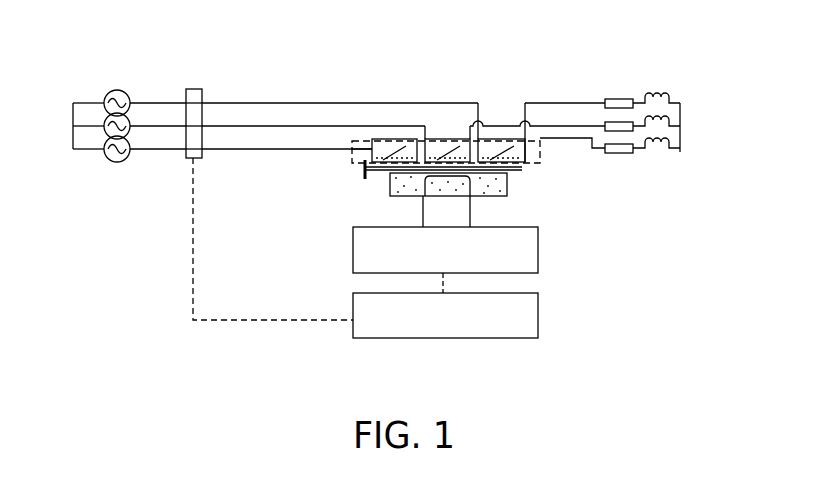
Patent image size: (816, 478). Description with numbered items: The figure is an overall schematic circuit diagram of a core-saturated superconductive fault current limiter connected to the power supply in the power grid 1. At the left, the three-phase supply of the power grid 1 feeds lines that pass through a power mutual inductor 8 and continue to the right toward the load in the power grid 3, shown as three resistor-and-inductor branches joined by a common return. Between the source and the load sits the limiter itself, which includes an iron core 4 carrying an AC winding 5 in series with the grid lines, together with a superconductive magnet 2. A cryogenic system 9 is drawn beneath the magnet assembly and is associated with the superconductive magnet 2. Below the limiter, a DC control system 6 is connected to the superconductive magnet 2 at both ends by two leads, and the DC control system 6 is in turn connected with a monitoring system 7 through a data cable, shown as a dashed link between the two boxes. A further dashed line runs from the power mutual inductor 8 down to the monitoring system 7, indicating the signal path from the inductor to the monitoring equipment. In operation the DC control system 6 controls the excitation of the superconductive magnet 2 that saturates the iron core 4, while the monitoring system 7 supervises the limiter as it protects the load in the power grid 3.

The power grid 1 is at (143, 92).
The superconductive magnet 2 is at (474, 186).
The load in the power grid 3 is at (598, 82).
The iron core 4 is at (541, 157).
The AC winding 5 is at (372, 162).
The DC control system 6 is at (541, 247).
The monitoring system 7 is at (541, 312).
The power mutual inductor 8 is at (205, 87).
The cryogenic system 9 is at (402, 186).